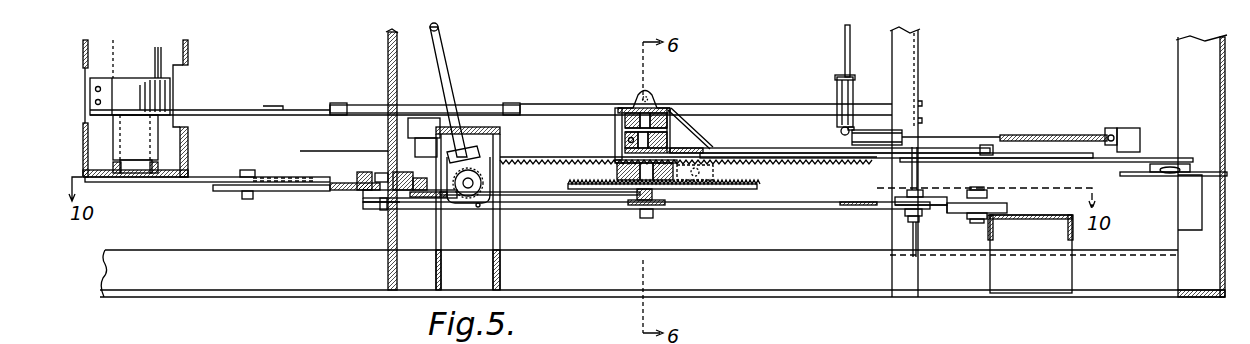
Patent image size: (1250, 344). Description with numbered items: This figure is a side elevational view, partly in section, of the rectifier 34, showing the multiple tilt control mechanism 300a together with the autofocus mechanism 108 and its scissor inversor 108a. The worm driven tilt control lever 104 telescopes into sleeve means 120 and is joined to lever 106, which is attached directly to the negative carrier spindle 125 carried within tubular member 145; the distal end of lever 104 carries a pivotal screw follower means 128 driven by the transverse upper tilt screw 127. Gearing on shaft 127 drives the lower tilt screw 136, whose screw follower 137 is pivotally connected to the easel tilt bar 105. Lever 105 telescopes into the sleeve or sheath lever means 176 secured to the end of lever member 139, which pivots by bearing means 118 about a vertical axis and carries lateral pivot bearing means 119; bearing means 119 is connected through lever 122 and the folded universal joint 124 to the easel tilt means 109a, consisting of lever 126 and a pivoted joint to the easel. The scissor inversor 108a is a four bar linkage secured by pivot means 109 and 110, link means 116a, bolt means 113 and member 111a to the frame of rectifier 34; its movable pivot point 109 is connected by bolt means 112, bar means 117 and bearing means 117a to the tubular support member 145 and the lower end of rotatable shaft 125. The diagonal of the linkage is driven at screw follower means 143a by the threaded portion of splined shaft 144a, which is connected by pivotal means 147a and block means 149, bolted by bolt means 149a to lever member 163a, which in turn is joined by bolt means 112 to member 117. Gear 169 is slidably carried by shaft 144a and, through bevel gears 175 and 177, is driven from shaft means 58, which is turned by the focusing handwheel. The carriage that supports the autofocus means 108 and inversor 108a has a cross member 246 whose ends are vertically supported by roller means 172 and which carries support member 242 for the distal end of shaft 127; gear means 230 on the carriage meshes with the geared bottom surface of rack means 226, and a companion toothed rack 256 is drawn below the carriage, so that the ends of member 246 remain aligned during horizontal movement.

The rectifier 34 is at (1173, 83).
The shaft means 58 is at (452, 90).
The worm driven tilt control lever 104 is at (535, 107).
The easel tilt bar 105 is at (773, 148).
The lever 106 is at (218, 110).
The autofocus mechanism 108 is at (946, 117).
The scissor inversor 108a is at (779, 223).
The pivot means 109 is at (379, 224).
The easel tilt means 109a is at (823, 68).
The pivot means 110 is at (907, 227).
The member 111a is at (1045, 209).
The bolt means 112 is at (248, 200).
The bolt means 113 is at (973, 224).
The link means 116a is at (947, 197).
The bar means 117 is at (207, 182).
The bearing means 117a is at (115, 173).
The bearing means 118 is at (1153, 166).
The bearing means 119 is at (1110, 132).
The sleeve means 120 is at (356, 96).
The lever 122 is at (1000, 140).
The universal joint 124 is at (868, 114).
The negative carrier spindle 125 is at (143, 70).
The lever 126 is at (845, 37).
The worm shaft 127 is at (701, 130).
The screw follower means 128 is at (683, 107).
The worm shaft 136 is at (625, 145).
The screw follower 137 is at (625, 140).
The lever member 139 is at (1046, 172).
The screw follower means 143a is at (650, 219).
The splined shaft 144a is at (557, 188).
The tubular member 145 is at (188, 45).
The pivotal means 147a is at (407, 198).
The block means 149 is at (381, 160).
The bolt means 149a is at (380, 205).
The strip 163a is at (302, 175).
The gear 169 is at (480, 208).
The roller means 172 is at (638, 96).
The bevel gear 175 is at (470, 203).
The sleeve or sheath lever means 176 is at (960, 147).
The bevel gear 177 is at (457, 202).
The rack means 226 is at (790, 163).
The gear means 230 is at (723, 152).
The support member 242 is at (670, 100).
The cross member 246 is at (565, 172).
The rack 256 is at (678, 193).
The tilt control mechanism 300a is at (611, 116).